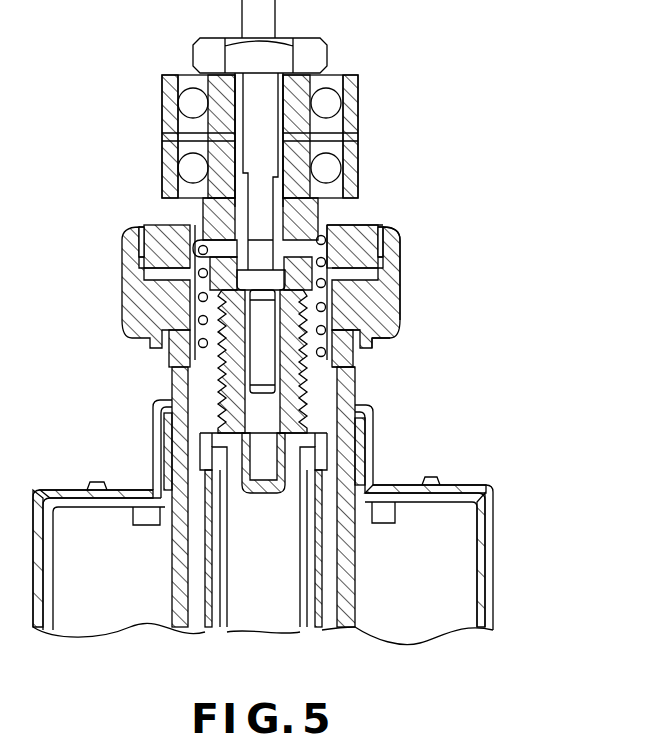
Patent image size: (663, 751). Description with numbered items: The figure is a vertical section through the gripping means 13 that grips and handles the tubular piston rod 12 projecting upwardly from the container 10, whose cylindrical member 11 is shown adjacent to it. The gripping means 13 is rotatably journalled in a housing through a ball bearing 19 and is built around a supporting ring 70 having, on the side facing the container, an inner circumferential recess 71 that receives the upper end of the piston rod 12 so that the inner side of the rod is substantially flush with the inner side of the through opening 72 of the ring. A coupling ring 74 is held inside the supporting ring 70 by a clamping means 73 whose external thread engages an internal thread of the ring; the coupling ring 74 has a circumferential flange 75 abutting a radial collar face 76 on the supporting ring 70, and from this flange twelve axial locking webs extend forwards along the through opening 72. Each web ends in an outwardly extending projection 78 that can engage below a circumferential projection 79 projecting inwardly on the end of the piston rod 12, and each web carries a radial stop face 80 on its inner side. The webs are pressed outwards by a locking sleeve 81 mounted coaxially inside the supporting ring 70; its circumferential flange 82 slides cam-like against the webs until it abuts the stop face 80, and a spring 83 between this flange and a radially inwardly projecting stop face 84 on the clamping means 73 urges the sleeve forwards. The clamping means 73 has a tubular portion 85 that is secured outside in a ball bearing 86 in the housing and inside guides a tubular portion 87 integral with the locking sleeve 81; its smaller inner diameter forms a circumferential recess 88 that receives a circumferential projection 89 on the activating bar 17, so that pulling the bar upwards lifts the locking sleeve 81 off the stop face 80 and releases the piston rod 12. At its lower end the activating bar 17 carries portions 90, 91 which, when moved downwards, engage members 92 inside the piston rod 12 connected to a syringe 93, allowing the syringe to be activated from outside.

The container 10 is at (497, 556).
The cylindrical member 11 is at (495, 513).
The tubular piston rod 12 is at (352, 382).
The gripping means 13 is at (402, 302).
The activating bar 17 is at (290, 224).
The ball bearing 19 is at (165, 113).
The supporting ring 70 is at (398, 256).
The inner circumferential recess 71 is at (387, 346).
The through opening 72 is at (400, 332).
The clamping means 73 is at (392, 226).
The coupling ring 74 is at (195, 252).
The circumferential flange 75 is at (122, 264).
The radial collar face 76 is at (172, 340).
The outwardly extending projection 78 is at (340, 386).
The circumferential projection 79 is at (362, 366).
The radial stop face 80 is at (170, 403).
The locking sleeve 81 is at (188, 231).
The circumferential flange 82 is at (172, 362).
The spring 83 is at (385, 268).
The stop face 84 is at (205, 228).
The tubular portion 85 is at (330, 70).
The ball bearing 86 is at (358, 108).
The tubular portion 87 is at (335, 210).
The circumferential recess 88 is at (378, 245).
The circumferential projection 89 is at (200, 240).
The portion 90 is at (343, 412).
The portion 91 is at (367, 443).
The members 92 is at (295, 475).
The syringe 93 is at (296, 560).